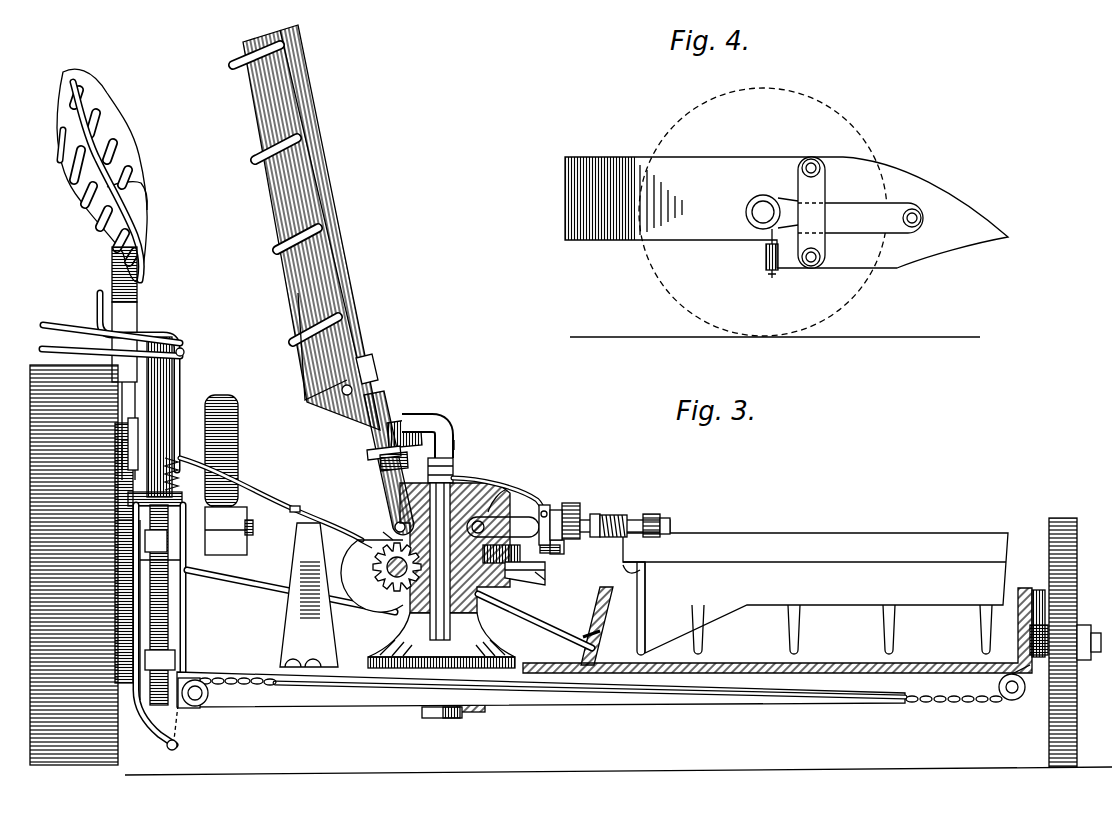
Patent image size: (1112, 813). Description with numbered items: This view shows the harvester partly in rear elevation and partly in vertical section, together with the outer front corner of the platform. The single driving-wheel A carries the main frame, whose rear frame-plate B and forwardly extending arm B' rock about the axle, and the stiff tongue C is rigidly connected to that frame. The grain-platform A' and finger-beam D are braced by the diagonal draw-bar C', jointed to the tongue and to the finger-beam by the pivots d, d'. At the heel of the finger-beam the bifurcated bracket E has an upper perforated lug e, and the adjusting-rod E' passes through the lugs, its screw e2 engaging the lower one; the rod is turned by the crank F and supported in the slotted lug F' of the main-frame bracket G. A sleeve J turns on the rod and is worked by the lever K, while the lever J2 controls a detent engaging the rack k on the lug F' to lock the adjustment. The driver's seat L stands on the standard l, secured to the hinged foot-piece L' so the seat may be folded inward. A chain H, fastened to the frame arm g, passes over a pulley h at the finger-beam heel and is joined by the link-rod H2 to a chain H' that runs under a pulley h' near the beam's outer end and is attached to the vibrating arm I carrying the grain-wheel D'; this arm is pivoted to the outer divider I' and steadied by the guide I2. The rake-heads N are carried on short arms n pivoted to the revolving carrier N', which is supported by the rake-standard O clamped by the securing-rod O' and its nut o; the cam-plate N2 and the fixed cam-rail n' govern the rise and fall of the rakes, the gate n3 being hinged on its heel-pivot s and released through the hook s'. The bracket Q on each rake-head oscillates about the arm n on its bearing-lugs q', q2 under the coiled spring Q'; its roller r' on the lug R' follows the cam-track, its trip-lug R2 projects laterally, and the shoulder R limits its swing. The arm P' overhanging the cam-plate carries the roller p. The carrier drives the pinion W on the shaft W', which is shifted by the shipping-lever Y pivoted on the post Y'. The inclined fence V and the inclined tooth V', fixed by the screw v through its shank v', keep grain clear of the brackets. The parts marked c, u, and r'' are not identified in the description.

In FIG. 3, the driving-wheel A is at (74, 565).
In FIG. 3, the frame-plate B is at (106, 553).
In FIG. 3, the forwardly-extending arm B' is at (110, 525).
In FIG. 3, the driver's seat L is at (102, 175).
In FIG. 3, the seat standard l is at (124, 363).
In FIG. 3, the crank F is at (138, 381).
In FIG. 3, the sleeve J is at (172, 380).
In FIG. 3, the detent lever J2 is at (88, 330).
In FIG. 3, the rocking lever K is at (42, 349).
In FIG. 3, the foot-piece L' is at (130, 434).
In FIG. 3, the detent rack k is at (180, 476).
In FIG. 3, the main-frame lug F' is at (136, 500).
In FIG. 3, the bifurcated bracket E is at (169, 625).
In FIG. 3, the adjusting-rod E' is at (247, 585).
In FIG. 3, the main-frame bracket G is at (140, 628).
In FIG. 3, the screw e2 is at (157, 605).
In FIG. 3, the upper lug e is at (154, 545).
In FIG. 3, the clamp block c is at (160, 660).
In FIG. 3, the main-frame arm g is at (160, 731).
In FIG. 3, the tongue C is at (229, 475).
In FIG. 3, the pivot d is at (271, 499).
In FIG. 3, the shipping-lever Y is at (291, 502).
In FIG. 3, the post Y' is at (309, 595).
In FIG. 3, the rake-head N is at (620, 339).
In FIG. 3, the screw v is at (339, 395).
In FIG. 3, the bracket Q is at (370, 372).
In FIG. 3, the cam-plate N2 is at (380, 488).
In FIG. 3, the rake-carrying arm n is at (462, 520).
In FIG. 3, the roller p is at (404, 424).
In FIG. 3, the lug R' is at (460, 515).
In FIG. 3, the cam-track roller r' is at (382, 465).
In FIG. 3, the overhanging arm P' is at (427, 437).
In FIG. 3, the trip-lug R2 is at (517, 479).
In FIG. 3, the rake-standard O is at (441, 573).
In FIG. 3, the securing-rod O' is at (453, 712).
In FIG. 3, the shaft W' is at (372, 576).
In FIG. 3, the pinion W is at (380, 567).
In FIG. 3, the pawl u is at (355, 547).
In FIG. 3, the revolving carrier N' is at (374, 528).
In FIG. 3, the nut o is at (498, 485).
In FIG. 3, the cam-track section n' is at (500, 486).
In FIG. 3, the switch gate n3 is at (509, 557).
In FIG. 3, the heel-pivot s is at (522, 578).
In FIG. 3, the hook s' is at (536, 582).
In FIG. 3, the latch pin r'' is at (550, 563).
In FIG. 3, the shoulder R is at (549, 513).
In FIG. 3, the inner bearing-lug q' is at (625, 512).
In FIG. 3, the spring Q' is at (613, 512).
In FIG. 3, the outer bearing-lug q2 is at (652, 514).
In FIG. 3, the inclined tooth V' is at (652, 608).
In FIG. 3, the shank v' is at (631, 578).
In FIG. 3, the inner fence V is at (602, 626).
In FIG. 3, the draw-bar C' is at (535, 621).
In FIG. 3, the pivot d' is at (602, 642).
In FIG. 3, the grain-platform A' is at (777, 630).
In FIG. 3, the grain-wheel D' is at (1075, 642).
In FIG. 4, the grain-wheel D' is at (763, 212).
In FIG. 3, the guide I2 is at (1037, 590).
In FIG. 4, the guide I2 is at (785, 212).
In FIG. 3, the grain-wheel arm I is at (1044, 639).
In FIG. 4, the grain-wheel arm I is at (861, 218).
In FIG. 4, the outer divider I' is at (920, 218).
In FIG. 3, the pulley h' is at (1014, 694).
In FIG. 4, the pulley h' is at (760, 251).
In FIG. 3, the chain H' is at (954, 710).
In FIG. 4, the chain H' is at (779, 282).
In FIG. 3, the finger-beam D is at (541, 689).
In FIG. 3, the link-rod H2 is at (605, 702).
In FIG. 3, the chain H is at (237, 668).
In FIG. 3, the pulley h is at (196, 702).